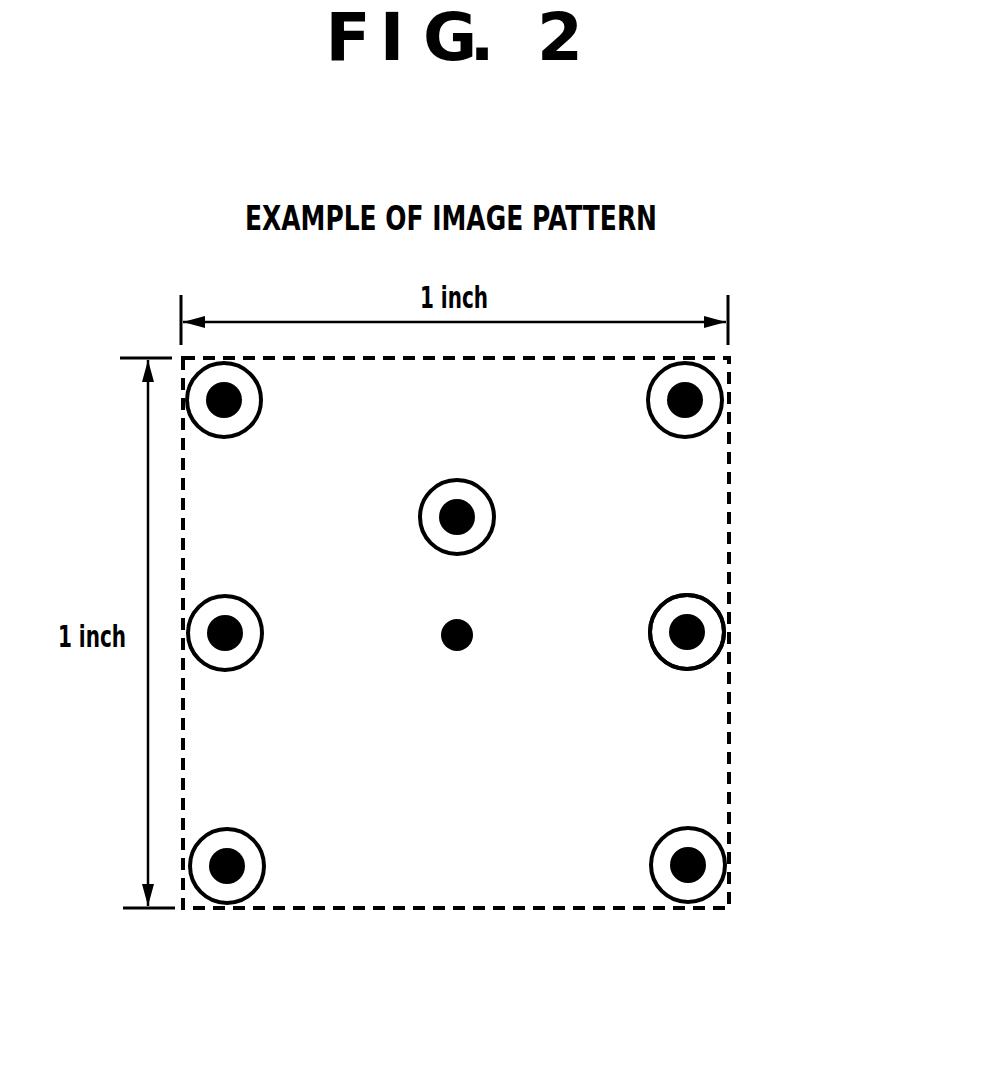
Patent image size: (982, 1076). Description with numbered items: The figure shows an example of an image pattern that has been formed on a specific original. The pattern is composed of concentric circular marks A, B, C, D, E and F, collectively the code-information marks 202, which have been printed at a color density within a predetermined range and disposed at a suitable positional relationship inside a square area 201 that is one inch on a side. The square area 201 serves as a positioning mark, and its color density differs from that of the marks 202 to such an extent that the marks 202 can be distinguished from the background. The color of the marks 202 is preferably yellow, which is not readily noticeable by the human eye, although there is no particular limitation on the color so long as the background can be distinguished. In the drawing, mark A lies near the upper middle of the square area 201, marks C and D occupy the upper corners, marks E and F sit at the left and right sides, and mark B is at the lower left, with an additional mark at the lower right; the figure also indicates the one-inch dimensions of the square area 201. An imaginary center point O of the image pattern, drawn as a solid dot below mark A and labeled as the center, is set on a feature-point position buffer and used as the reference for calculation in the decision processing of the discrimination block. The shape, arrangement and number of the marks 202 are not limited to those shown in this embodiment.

The square area 201 is at (711, 749).
The concentric circular marks 202 is at (705, 630).
The mark A is at (457, 495).
The mark B is at (227, 846).
The mark C is at (224, 420).
The mark D is at (685, 420).
The mark E is at (225, 612).
The mark F is at (687, 611).
The center point O is at (464, 656).